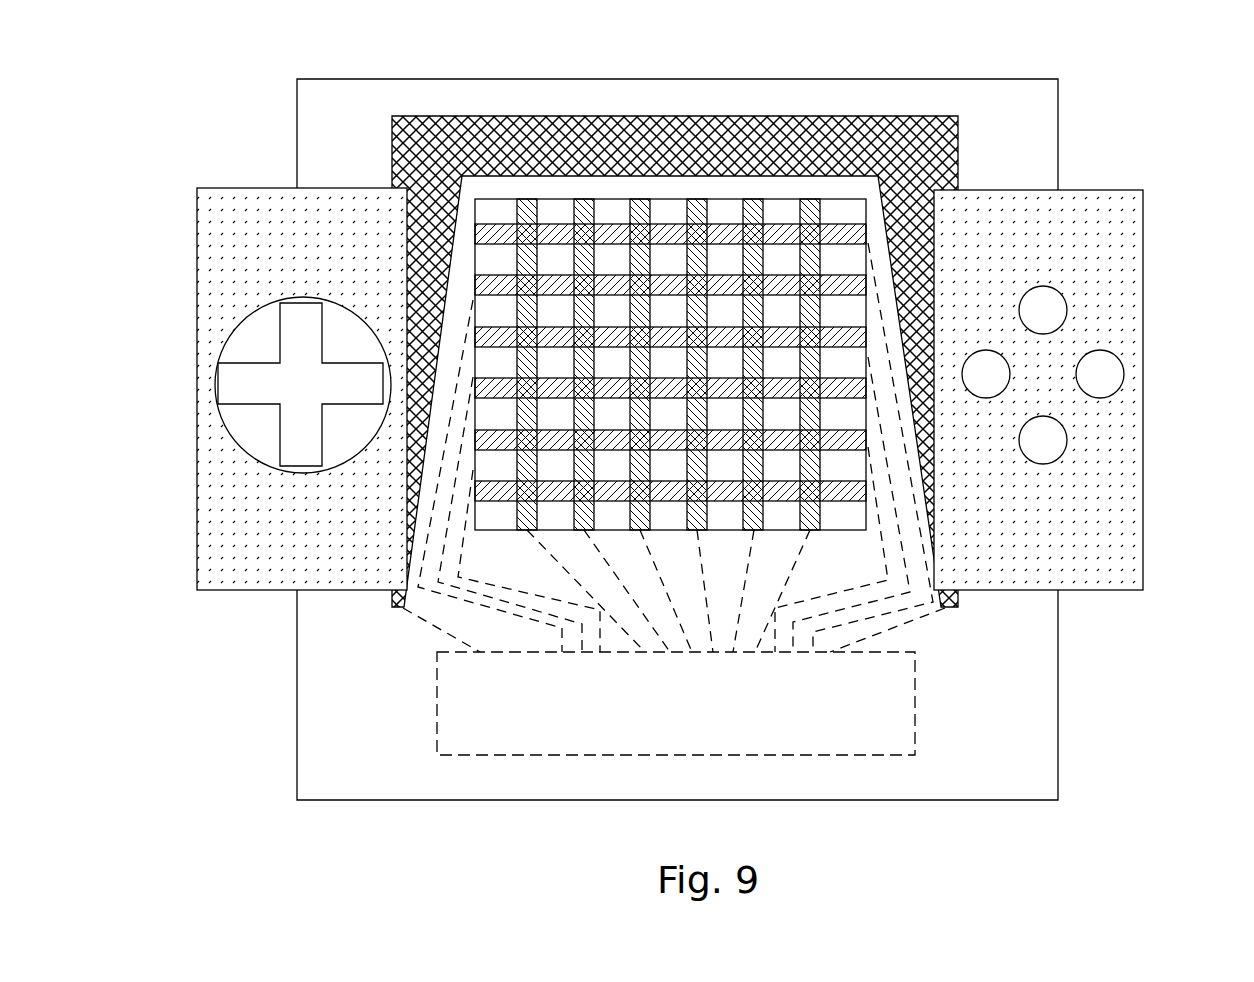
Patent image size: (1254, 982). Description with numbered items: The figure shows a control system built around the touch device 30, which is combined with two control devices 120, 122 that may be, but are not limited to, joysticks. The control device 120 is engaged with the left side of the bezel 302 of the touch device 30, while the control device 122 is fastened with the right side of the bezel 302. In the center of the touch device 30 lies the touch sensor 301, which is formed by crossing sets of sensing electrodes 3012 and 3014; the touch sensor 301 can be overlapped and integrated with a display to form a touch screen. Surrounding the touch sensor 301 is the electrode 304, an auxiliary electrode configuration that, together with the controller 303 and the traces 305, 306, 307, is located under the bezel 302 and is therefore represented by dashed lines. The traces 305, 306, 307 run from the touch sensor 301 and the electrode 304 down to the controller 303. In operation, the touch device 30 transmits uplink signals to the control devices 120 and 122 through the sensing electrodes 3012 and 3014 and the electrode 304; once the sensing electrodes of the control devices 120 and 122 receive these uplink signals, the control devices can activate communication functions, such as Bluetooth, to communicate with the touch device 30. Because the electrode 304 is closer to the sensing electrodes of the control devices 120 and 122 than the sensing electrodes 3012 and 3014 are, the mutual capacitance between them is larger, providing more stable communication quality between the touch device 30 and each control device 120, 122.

The touch device 30 is at (974, 79).
The bezel 302 is at (1025, 112).
The electrode 304 is at (950, 158).
The control device 120 is at (232, 227).
The control device 122 is at (1121, 238).
The touch sensor 301 is at (686, 345).
The sensing electrode 3012 is at (808, 205).
The sensing electrode 3014 is at (847, 227).
The trace 305 is at (462, 568).
The trace 306 is at (790, 563).
The trace 307 is at (442, 630).
The controller 303 is at (880, 717).